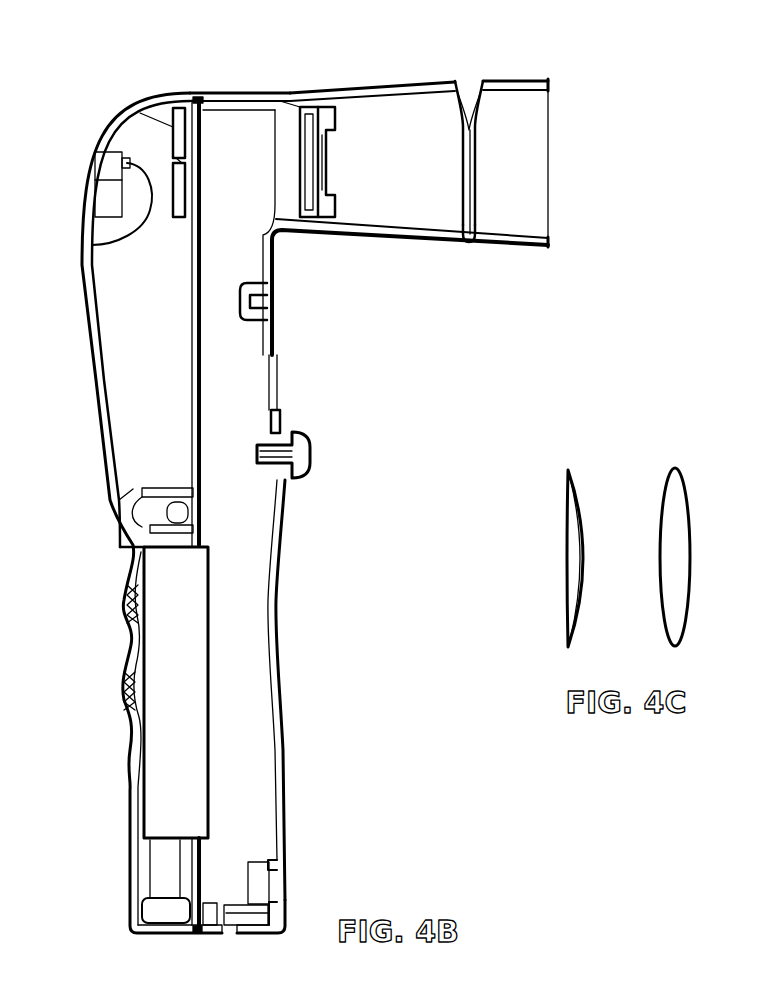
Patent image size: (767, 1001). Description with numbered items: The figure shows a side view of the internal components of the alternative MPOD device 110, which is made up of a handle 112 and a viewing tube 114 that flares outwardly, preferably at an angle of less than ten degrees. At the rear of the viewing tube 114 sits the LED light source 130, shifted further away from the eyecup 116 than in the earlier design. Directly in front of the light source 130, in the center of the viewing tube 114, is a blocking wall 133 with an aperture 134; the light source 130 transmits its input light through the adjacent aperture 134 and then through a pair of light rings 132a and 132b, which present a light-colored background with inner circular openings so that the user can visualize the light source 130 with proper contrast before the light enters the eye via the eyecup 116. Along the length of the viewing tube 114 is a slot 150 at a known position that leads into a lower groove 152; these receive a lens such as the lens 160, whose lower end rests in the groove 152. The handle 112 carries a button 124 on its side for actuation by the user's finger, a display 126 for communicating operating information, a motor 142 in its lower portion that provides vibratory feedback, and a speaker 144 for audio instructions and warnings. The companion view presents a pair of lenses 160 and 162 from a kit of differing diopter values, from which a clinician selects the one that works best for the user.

In FIG. 4B, the MPOD device 110 is at (640, 63).
In FIG. 4B, the handle 112 is at (282, 666).
In FIG. 4B, the viewing tube 114 is at (383, 246).
In FIG. 4B, the eyecup 116 is at (549, 245).
In FIG. 4B, the button 124 is at (309, 458).
In FIG. 4B, the display 126 is at (273, 386).
In FIG. 4B, the LED light source 130 is at (94, 245).
In FIG. 4B, the light ring 132a is at (333, 122).
In FIG. 4B, the light ring 132b is at (268, 107).
In FIG. 4B, the blocking wall 133 is at (138, 113).
In FIG. 4B, the aperture 134 is at (186, 164).
In FIG. 4B, the motor 142 is at (153, 913).
In FIG. 4B, the speaker 144 is at (282, 887).
In FIG. 4B, the slot 150 is at (472, 78).
In FIG. 4B, the lower groove 152 is at (473, 229).
In FIG. 4C, the lens 160 is at (683, 481).
In FIG. 4C, the lens 162 is at (578, 481).